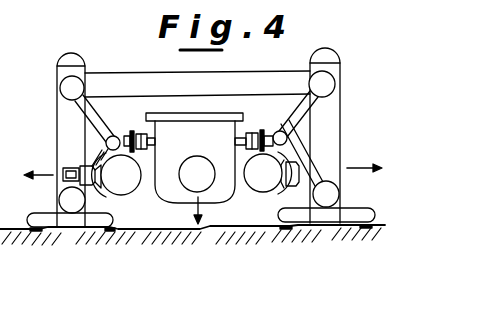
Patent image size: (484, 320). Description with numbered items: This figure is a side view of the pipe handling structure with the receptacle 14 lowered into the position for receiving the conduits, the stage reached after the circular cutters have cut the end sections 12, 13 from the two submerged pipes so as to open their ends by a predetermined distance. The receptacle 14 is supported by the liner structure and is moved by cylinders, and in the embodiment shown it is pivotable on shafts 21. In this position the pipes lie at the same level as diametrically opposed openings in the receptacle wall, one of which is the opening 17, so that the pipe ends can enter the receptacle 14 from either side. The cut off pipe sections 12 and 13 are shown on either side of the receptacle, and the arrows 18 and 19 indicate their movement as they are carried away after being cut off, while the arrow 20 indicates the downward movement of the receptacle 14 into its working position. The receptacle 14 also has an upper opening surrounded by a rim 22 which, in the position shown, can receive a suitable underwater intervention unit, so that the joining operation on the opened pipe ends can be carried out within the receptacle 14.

The end section 12 is at (122, 177).
The end section 13 is at (264, 177).
The receptacle 14 is at (180, 196).
The opening 17 is at (200, 163).
The arrow 18 is at (40, 175).
The arrow 19 is at (356, 168).
The arrow 20 is at (206, 217).
The shaft 21 is at (150, 136).
The rim 22 is at (172, 118).